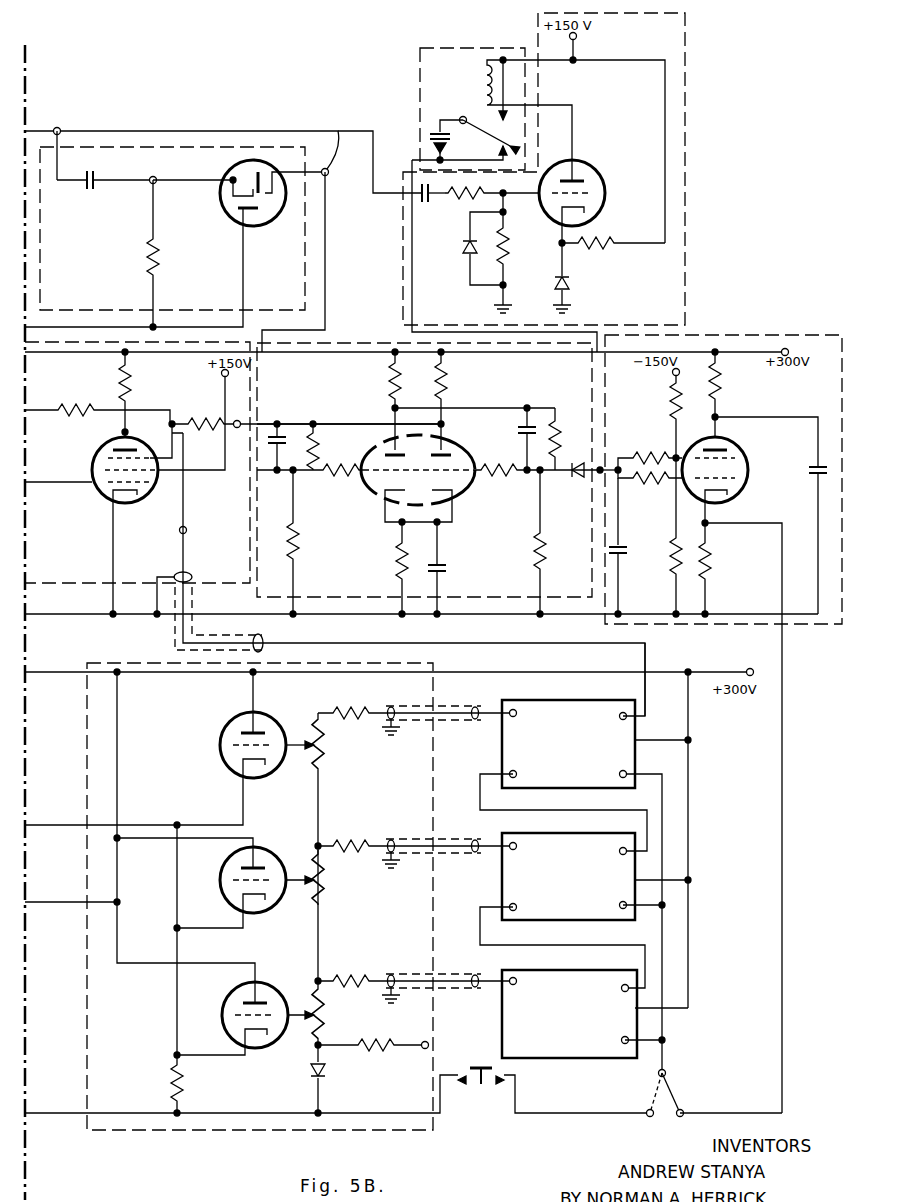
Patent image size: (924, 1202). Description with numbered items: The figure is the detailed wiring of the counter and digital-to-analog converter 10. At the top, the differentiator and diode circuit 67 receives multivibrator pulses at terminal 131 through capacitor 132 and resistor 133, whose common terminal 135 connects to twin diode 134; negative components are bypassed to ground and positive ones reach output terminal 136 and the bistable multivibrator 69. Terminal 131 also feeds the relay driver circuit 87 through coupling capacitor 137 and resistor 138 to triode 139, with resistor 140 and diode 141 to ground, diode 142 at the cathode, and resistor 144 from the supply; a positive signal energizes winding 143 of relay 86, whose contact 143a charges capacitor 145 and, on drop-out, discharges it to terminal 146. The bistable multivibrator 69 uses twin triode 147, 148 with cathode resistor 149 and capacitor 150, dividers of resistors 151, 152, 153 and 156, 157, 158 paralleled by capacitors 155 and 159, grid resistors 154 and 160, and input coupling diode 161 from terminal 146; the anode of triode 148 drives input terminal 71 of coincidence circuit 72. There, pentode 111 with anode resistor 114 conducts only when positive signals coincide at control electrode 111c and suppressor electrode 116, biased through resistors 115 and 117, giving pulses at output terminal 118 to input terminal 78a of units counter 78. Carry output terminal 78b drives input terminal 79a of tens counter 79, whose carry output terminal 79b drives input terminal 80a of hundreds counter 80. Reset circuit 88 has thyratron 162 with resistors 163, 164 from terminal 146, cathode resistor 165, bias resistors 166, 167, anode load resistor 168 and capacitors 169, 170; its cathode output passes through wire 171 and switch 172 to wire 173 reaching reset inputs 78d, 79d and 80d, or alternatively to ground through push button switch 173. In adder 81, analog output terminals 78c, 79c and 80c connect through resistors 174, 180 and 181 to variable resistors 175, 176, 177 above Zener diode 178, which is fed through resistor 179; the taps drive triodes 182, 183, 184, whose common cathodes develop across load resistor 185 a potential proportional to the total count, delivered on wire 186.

The counter and digital-to-analog converter 10 is at (88, 1040).
The differentiator and diode circuit 67 is at (40, 250).
The bistable multivibrator 69 is at (488, 594).
The input terminal 71 is at (238, 428).
The coincidence circuit 72 is at (40, 588).
The units counter 78 is at (581, 698).
The input terminal 78a is at (620, 683).
The carry output terminal 78b is at (563, 810).
The analog output terminal 78c is at (526, 715).
The reset input 78d is at (610, 777).
The tens counter 79 is at (564, 834).
The input terminal 79a is at (611, 851).
The carry output terminal 79b is at (562, 945).
The analog output terminal 79c is at (526, 848).
The reset input 79d is at (628, 910).
The hundreds counter 80 is at (549, 972).
The input terminal 80a is at (613, 987).
The analog output terminal 80c is at (526, 983).
The reset input 80d is at (628, 1046).
The adder circuit 81 is at (150, 1132).
The relay 86 is at (444, 48).
The relay driver circuit 87 is at (690, 74).
The reset circuit 88 is at (795, 628).
The pentode 111 is at (97, 446).
The control electrode 111c is at (105, 502).
The resistor 114 is at (124, 380).
The resistor 115 is at (68, 400).
The suppressor electrode 116 is at (90, 460).
The resistor 117 is at (215, 405).
The output terminal 118 is at (188, 526).
The terminal 131 is at (68, 122).
The capacitor 132 is at (90, 192).
The resistor 133 is at (146, 256).
The twin diode 134 is at (224, 214).
The common terminal 135 is at (156, 178).
The output terminal 136 is at (327, 165).
The coupling capacitor 137 is at (420, 200).
The resistor 138 is at (460, 198).
The triode 139 is at (597, 160).
The resistor 140 is at (522, 243).
The diode 141 is at (463, 248).
The diode 142 is at (570, 286).
The winding 143 is at (477, 80).
The contact 143a is at (466, 110).
The resistor 144 is at (603, 258).
The capacitor 145 is at (434, 120).
The terminal 146 is at (604, 488).
The triode 147 is at (366, 498).
The triode 148 is at (462, 500).
The resistor 149 is at (398, 562).
The capacitor 150 is at (442, 567).
The resistor 151 is at (446, 380).
The resistor 152 is at (322, 438).
The resistor 153 is at (292, 540).
The resistor 154 is at (341, 490).
The capacitor 155 is at (282, 430).
The resistor 156 is at (390, 379).
The resistor 157 is at (558, 418).
The resistor 158 is at (534, 550).
The capacitor 159 is at (522, 416).
The resistor 160 is at (498, 464).
The input coupling diode 161 is at (574, 478).
The thyratron 162 is at (735, 448).
The resistor 163 is at (657, 454).
The resistor 164 is at (656, 485).
The resistor 165 is at (712, 566).
The resistor 166 is at (670, 398).
The resistor 167 is at (674, 568).
The anode load resistor 168 is at (722, 390).
The capacitor 169 is at (632, 548).
The capacitor 170 is at (808, 472).
The wire 171 is at (784, 712).
The switch 172 is at (672, 1082).
The wire and push button switch 173 is at (470, 1090).
The resistor 174 is at (345, 722).
The variable resistor 175 is at (322, 760).
The variable resistor 176 is at (322, 890).
The variable resistor 177 is at (322, 1025).
The Zener diode 178 is at (308, 1077).
The resistor 179 is at (372, 1052).
The resistor 180 is at (356, 844).
The resistor 181 is at (352, 980).
The triode 182 is at (218, 744).
The triode 183 is at (223, 872).
The triode 184 is at (230, 1000).
The load resistor 185 is at (170, 1082).
The wire 186 is at (55, 822).